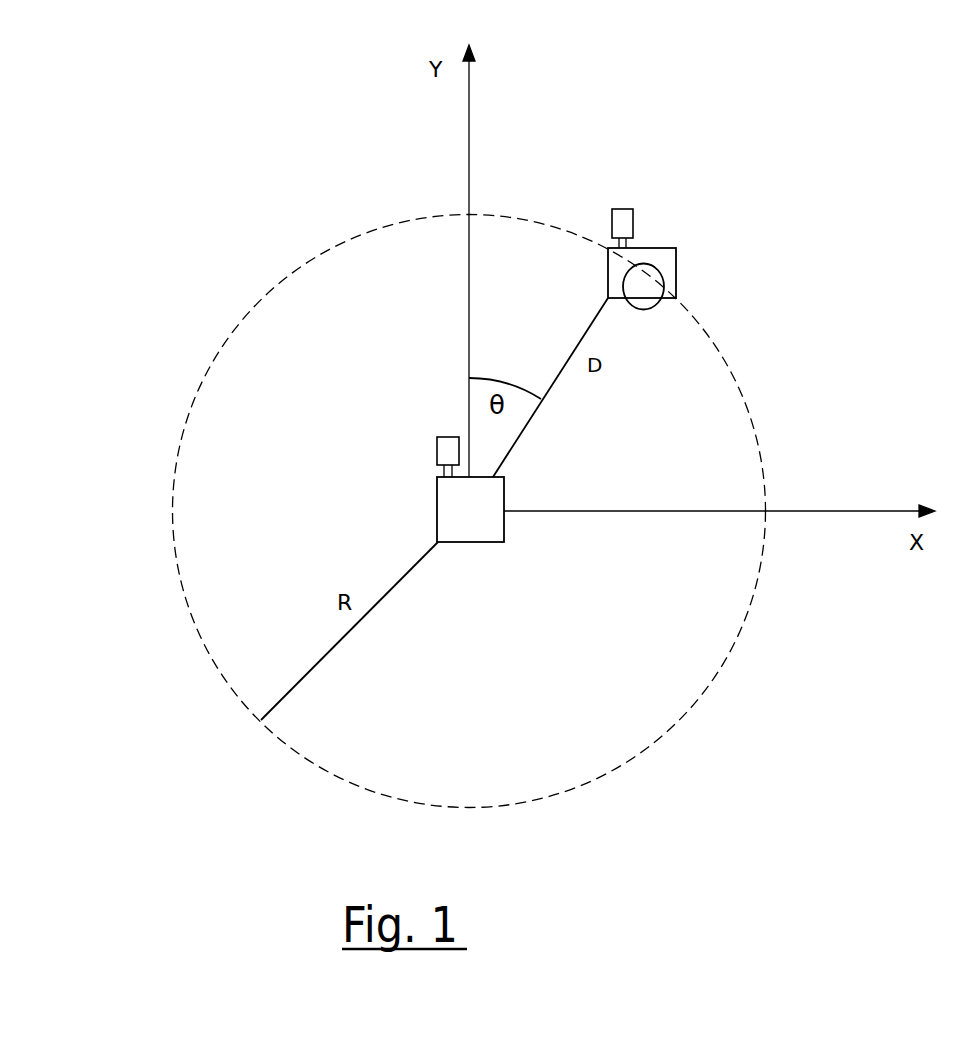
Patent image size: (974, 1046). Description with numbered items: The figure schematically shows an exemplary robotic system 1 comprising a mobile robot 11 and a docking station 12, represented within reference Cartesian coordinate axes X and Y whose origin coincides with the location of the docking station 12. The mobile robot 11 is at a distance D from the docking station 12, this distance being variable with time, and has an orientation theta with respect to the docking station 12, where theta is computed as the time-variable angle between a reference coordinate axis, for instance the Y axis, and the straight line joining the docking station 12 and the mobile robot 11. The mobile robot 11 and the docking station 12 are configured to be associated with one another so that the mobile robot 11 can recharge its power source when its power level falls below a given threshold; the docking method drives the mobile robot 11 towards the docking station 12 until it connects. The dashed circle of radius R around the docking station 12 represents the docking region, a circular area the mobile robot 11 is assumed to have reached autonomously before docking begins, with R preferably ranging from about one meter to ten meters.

The robotic system 1 is at (406, 394).
The mobile robot 11 is at (686, 226).
The docking station 12 is at (496, 566).